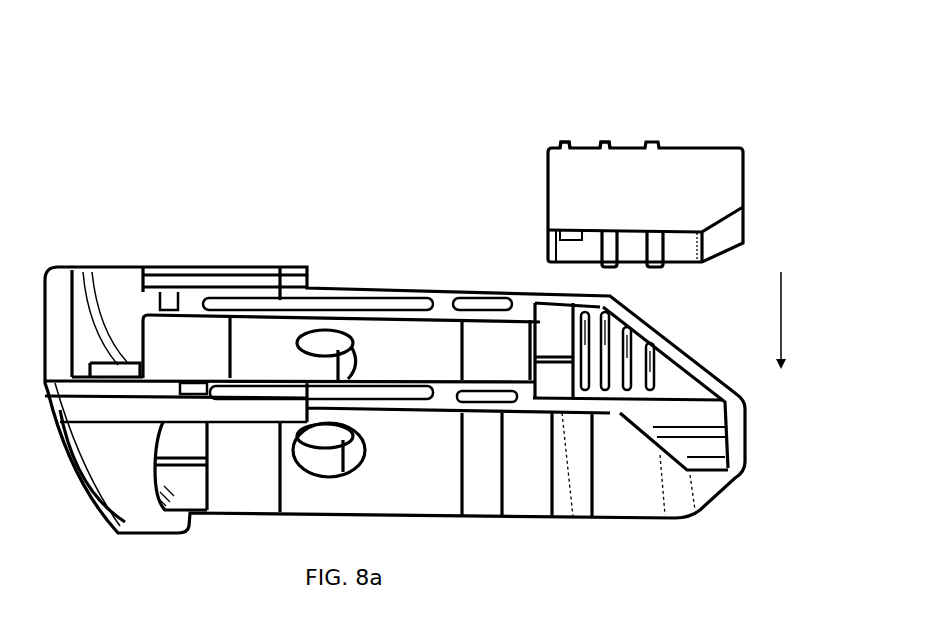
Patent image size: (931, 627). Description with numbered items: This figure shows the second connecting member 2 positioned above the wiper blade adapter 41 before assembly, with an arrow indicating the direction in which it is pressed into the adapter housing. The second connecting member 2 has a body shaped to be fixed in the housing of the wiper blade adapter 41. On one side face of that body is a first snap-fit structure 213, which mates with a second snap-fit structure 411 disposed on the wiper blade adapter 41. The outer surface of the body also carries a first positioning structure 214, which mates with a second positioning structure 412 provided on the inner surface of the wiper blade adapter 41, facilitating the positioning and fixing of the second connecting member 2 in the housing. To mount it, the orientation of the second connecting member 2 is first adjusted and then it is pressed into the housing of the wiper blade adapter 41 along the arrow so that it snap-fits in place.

The second connecting member 2 is at (702, 162).
The first snap-fit structure 213 is at (565, 141).
The first positioning structure 214 is at (606, 141).
The wiper blade adapter 41 is at (115, 458).
The second snap-fit structure 411 is at (573, 520).
The second positioning structure 412 is at (657, 367).